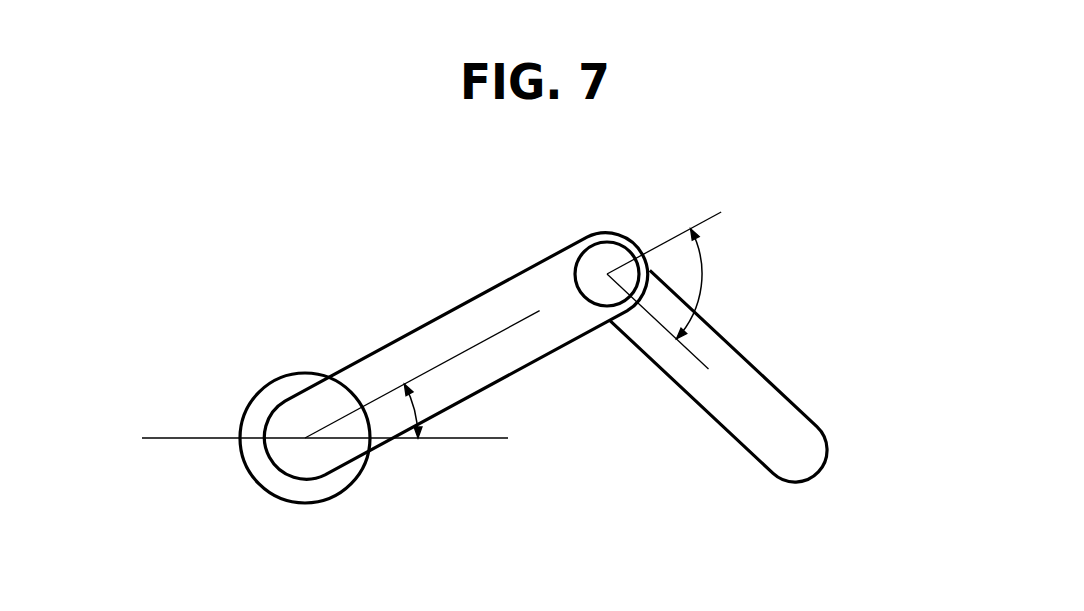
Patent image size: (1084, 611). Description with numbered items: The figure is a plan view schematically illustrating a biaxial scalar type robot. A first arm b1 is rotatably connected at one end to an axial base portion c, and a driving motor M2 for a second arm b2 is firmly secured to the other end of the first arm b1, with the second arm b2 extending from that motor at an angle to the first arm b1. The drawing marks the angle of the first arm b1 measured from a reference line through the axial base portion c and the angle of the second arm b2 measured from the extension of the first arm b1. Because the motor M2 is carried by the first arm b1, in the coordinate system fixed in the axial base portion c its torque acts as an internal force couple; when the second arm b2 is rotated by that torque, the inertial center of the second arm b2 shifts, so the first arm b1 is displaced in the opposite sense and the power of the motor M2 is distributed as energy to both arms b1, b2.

The first arm b1 is at (468, 300).
The second arm b2 is at (770, 387).
The axial base portion C is at (243, 462).
The driving motor M2 is at (606, 258).